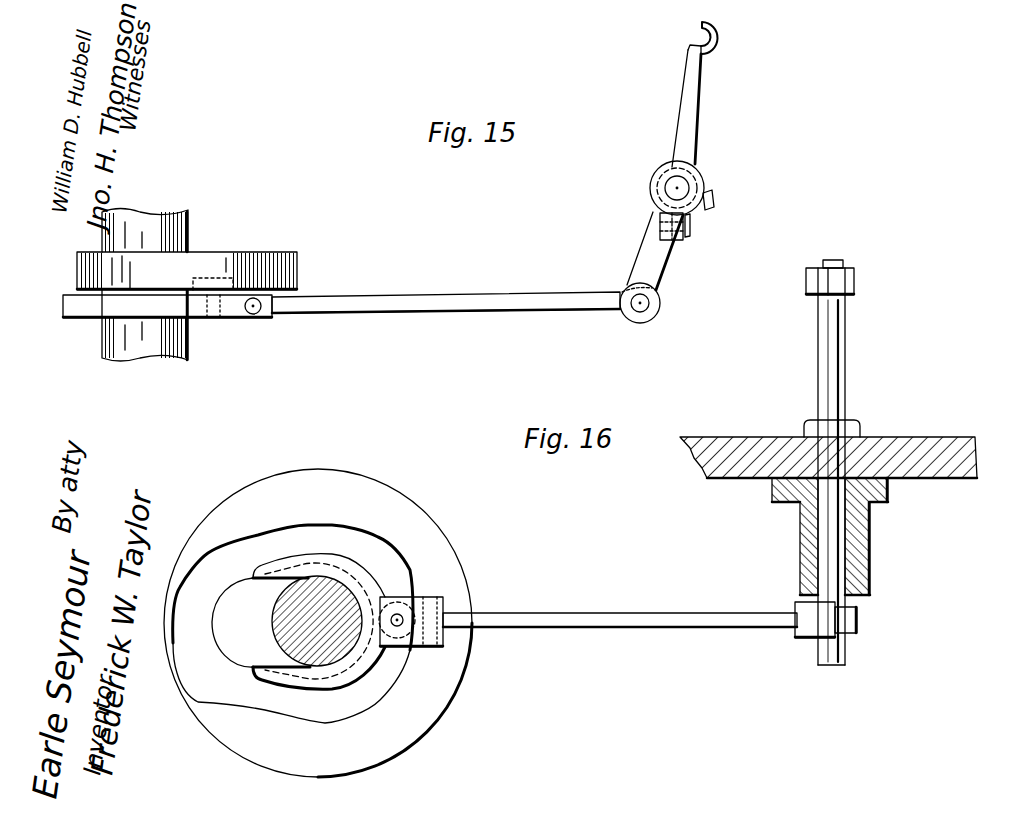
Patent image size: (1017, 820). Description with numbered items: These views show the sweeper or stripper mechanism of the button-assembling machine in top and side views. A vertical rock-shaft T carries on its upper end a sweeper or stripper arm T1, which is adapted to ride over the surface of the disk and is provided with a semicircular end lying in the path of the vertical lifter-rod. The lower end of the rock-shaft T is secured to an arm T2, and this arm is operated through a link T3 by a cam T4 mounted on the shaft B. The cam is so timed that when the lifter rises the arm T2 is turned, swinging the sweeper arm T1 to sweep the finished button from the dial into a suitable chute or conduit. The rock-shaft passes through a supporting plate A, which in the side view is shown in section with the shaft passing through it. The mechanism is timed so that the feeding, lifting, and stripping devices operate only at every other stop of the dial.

In FIG. 16, the supporting plate / frame A is at (828, 444).
In FIG. 15, the shaft B is at (160, 354).
In FIG. 16, the shaft B is at (284, 618).
In FIG. 15, the vertical rock-shaft T is at (679, 188).
In FIG. 16, the vertical rock-shaft T is at (832, 538).
In FIG. 15, the sweeper or stripper arm T1 is at (688, 103).
In FIG. 16, the sweeper or stripper arm T1 is at (854, 275).
In FIG. 15, the arm T2 is at (657, 267).
In FIG. 16, the arm T2 is at (802, 641).
In FIG. 15, the link T3 is at (446, 316).
In FIG. 16, the link T3 is at (620, 608).
In FIG. 15, the cam T4 is at (233, 272).
In FIG. 16, the cam T4 is at (433, 558).